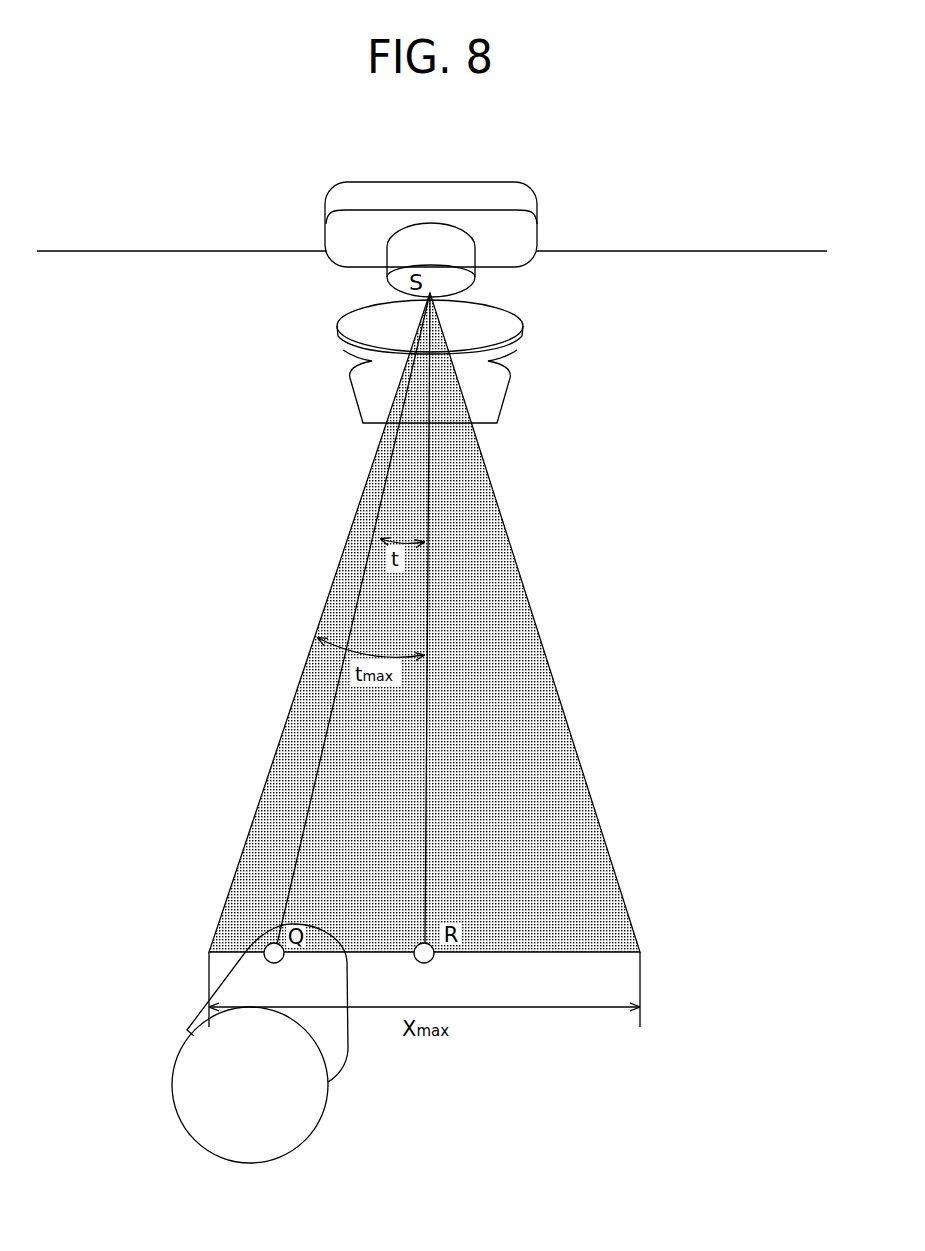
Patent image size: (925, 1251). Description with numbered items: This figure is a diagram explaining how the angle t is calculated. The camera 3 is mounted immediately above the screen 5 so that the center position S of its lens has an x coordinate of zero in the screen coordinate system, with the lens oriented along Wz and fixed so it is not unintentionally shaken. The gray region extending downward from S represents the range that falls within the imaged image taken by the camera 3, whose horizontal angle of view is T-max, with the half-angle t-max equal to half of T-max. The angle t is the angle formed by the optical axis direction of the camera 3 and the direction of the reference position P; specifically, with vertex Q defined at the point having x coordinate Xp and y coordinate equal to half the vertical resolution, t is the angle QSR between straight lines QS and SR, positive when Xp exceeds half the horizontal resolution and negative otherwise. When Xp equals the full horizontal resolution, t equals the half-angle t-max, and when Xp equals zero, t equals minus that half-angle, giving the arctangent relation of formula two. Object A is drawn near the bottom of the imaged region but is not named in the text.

The camera 3 is at (526, 185).
The screen 5 is at (523, 320).
The object A is at (193, 1143).